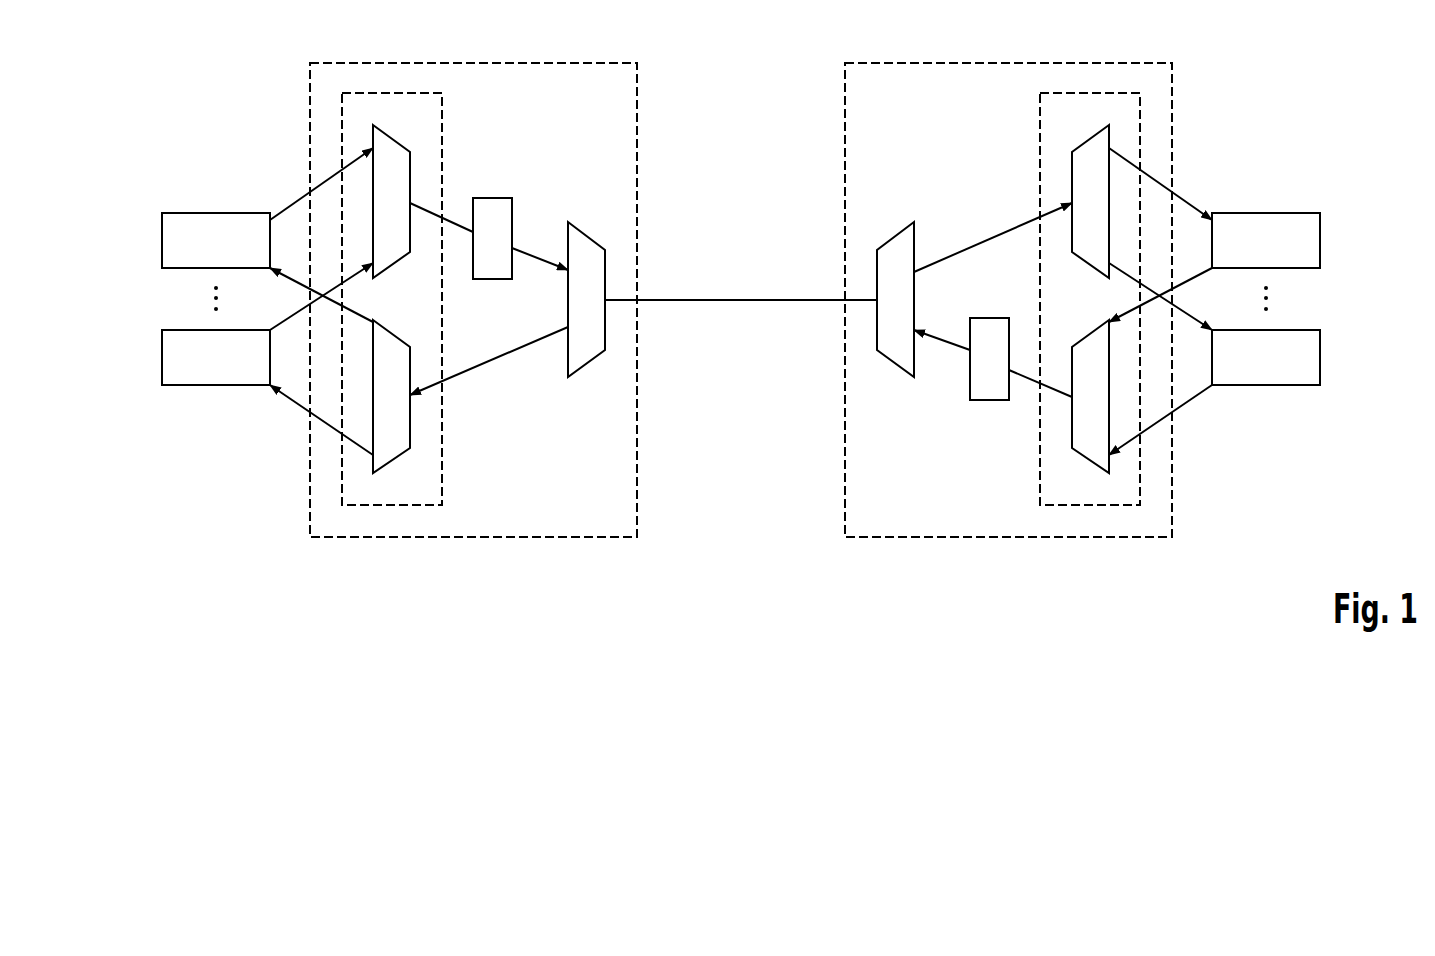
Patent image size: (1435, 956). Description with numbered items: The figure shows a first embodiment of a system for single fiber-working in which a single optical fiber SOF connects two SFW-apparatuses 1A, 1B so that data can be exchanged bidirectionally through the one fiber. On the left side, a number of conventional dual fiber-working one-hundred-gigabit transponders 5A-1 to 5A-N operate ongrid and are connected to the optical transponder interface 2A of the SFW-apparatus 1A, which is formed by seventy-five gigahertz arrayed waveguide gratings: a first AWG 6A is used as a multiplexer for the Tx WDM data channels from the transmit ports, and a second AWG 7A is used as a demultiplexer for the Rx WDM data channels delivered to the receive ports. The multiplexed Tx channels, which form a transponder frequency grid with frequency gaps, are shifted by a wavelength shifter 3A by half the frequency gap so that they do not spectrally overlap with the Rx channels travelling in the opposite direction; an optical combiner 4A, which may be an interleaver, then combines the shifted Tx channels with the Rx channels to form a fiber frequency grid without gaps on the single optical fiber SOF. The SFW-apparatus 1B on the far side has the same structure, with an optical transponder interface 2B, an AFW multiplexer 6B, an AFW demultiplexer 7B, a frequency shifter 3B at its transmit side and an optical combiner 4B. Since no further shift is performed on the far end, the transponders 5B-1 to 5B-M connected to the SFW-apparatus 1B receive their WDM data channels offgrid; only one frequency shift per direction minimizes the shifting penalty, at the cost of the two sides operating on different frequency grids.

The SFW-apparatus 1A is at (637, 113).
The optical transponder interface 2A is at (428, 93).
The wavelength shifter 3A is at (494, 198).
The optical combiner 4A is at (607, 268).
The transponder 5A-N is at (162, 237).
The transponder 5A-1 is at (162, 352).
The first AWG 6A is at (392, 138).
The second AWG 7A is at (397, 462).
The single optical fiber SOF is at (727, 300).
The SFW-apparatus 1B is at (845, 113).
The optical transponder interface 2B is at (1054, 93).
The frequency shifter 3B is at (990, 400).
The optical combiner 4B is at (877, 268).
The transponder 5B-M is at (1320, 237).
The transponder 5B-1 is at (1320, 352).
The AFW multiplexer 6B is at (1088, 462).
The AFW demultiplexer 7B is at (1090, 138).